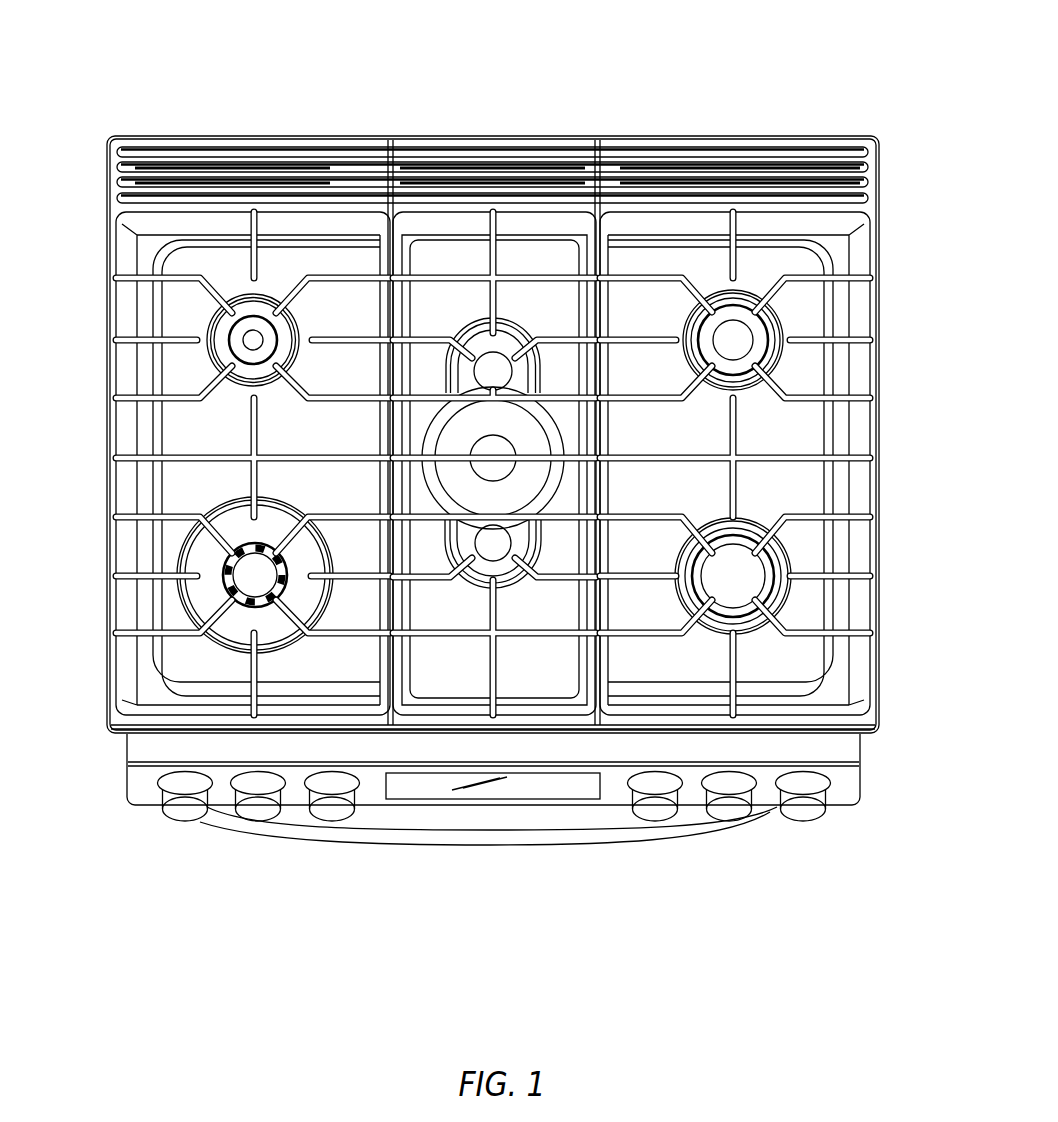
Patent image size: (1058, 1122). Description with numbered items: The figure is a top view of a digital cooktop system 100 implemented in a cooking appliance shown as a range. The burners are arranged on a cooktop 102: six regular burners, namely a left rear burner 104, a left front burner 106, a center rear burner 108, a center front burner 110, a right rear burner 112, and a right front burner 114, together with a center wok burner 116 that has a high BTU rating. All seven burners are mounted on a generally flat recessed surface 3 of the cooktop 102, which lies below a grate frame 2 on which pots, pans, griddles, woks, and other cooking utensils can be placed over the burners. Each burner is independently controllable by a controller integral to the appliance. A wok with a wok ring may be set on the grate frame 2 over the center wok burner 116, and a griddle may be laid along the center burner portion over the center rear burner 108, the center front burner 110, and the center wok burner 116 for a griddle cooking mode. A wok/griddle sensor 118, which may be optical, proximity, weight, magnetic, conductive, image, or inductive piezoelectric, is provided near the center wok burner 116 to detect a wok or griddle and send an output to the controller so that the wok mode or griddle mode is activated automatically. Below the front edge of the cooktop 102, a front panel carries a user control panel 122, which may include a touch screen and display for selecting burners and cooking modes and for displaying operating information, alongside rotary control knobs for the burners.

The digital cooktop system 100 is at (502, 455).
The grate frame 2 is at (502, 492).
The recessed surface 3 is at (800, 483).
The cooktop 102 is at (882, 670).
The left rear burner 104 is at (240, 300).
The left front burner 106 is at (173, 613).
The center rear burner 108 is at (510, 331).
The center front burner 110 is at (478, 568).
The right rear burner 112 is at (797, 322).
The right front burner 114 is at (800, 555).
The center wok burner 116 is at (413, 430).
The wok/griddle sensor 118 is at (419, 484).
The user control panel 122 is at (565, 800).